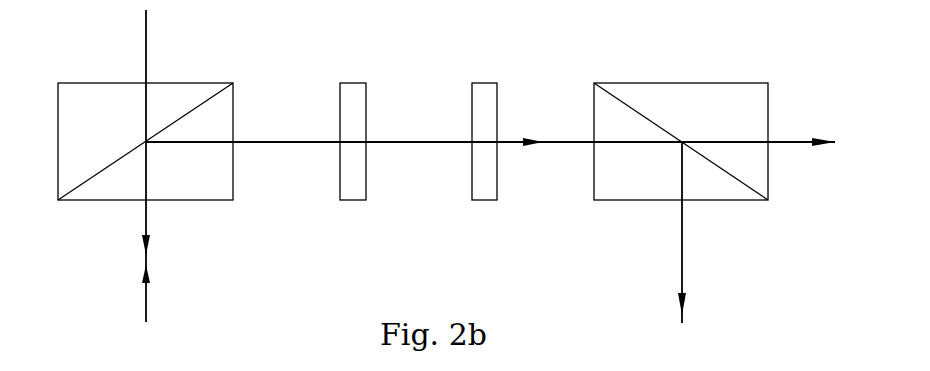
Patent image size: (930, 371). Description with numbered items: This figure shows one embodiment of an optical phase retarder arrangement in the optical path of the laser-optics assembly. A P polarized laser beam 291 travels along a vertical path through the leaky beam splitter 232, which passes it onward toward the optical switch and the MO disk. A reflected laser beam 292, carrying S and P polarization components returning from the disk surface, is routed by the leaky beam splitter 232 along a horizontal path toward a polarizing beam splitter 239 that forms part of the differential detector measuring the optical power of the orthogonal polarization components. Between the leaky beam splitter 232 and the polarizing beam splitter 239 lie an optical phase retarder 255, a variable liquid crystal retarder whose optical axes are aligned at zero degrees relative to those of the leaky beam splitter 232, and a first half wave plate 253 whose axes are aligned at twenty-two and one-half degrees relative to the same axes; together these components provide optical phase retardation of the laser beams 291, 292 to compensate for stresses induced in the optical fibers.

The leaky beam splitter 232 is at (110, 82).
The optical phase retarder 255 is at (345, 82).
The first ½ wave plate 253 is at (478, 82).
The polarizing beam splitter 239 is at (770, 103).
The P polarized laser beam 291 is at (142, 245).
The reflected laser beam 292 is at (142, 276).